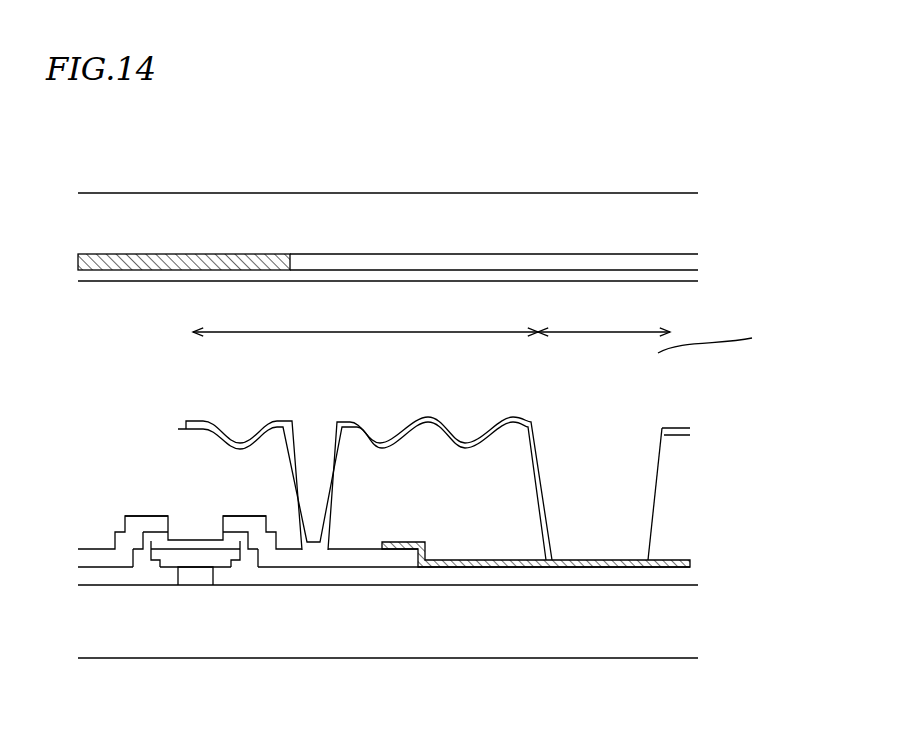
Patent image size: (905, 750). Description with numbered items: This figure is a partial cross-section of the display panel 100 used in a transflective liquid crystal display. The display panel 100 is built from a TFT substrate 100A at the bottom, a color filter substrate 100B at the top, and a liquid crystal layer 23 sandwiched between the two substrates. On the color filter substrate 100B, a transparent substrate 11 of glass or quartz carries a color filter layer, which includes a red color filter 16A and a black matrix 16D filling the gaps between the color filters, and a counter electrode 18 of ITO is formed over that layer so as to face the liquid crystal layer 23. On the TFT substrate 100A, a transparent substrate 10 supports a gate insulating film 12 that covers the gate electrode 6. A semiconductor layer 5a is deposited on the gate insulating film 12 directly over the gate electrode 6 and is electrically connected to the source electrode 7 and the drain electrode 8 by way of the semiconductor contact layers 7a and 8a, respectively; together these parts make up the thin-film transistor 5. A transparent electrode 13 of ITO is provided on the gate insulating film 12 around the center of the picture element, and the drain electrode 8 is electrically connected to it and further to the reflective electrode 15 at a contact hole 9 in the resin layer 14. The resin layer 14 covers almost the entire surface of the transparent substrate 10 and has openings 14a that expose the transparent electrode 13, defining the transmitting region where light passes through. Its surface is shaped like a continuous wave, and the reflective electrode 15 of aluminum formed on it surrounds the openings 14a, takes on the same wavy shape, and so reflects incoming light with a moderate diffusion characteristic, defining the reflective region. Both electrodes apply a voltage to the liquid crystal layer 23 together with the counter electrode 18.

The display panel 100 is at (682, 135).
The TFT substrate 100A is at (762, 380).
The color filter substrate 100B is at (227, 146).
The transparent substrate 11 is at (352, 235).
The black matrix 16D is at (240, 253).
The red color filter 16A is at (430, 260).
The counter electrode 18 is at (503, 275).
The liquid crystal layer 23 is at (720, 336).
The transparent substrate 10 is at (648, 624).
The gate electrode 6 is at (192, 580).
The gate insulating film 12 is at (668, 578).
The source electrode 7 is at (95, 557).
The semiconductor contact layer 7a is at (137, 553).
The semiconductor layer 5a is at (148, 563).
The semiconductor contact layer 8a is at (227, 540).
The drain electrode 8 is at (260, 540).
The thin-film transistor 5 is at (193, 520).
The resin layer 14 is at (680, 497).
The opening 14a is at (622, 458).
The transparent electrode 13 is at (627, 558).
The contact hole 9 is at (315, 420).
The reflective electrode 15 is at (690, 432).